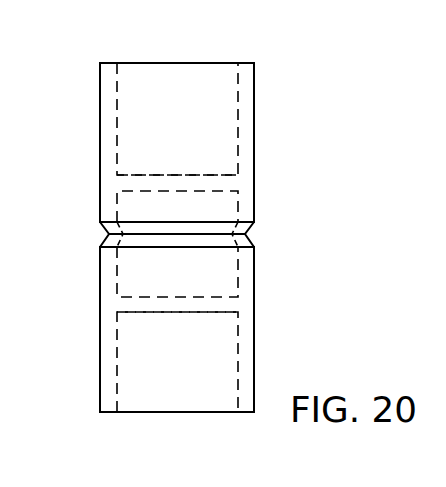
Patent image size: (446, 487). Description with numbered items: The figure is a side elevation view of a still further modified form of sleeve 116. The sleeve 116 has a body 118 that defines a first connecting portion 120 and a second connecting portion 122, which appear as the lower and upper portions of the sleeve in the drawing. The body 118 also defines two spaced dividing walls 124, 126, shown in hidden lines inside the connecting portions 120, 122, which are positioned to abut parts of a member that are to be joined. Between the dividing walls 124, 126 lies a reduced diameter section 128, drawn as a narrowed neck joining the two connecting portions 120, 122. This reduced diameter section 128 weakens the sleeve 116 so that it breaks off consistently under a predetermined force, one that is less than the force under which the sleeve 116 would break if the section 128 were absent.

The sleeve 116 is at (256, 176).
The body 118 is at (256, 112).
The first connecting portion 120 is at (256, 368).
The second connecting portion 122 is at (256, 70).
The dividing wall 124 is at (152, 312).
The dividing wall 126 is at (147, 158).
The reduced diameter section 128 is at (250, 230).